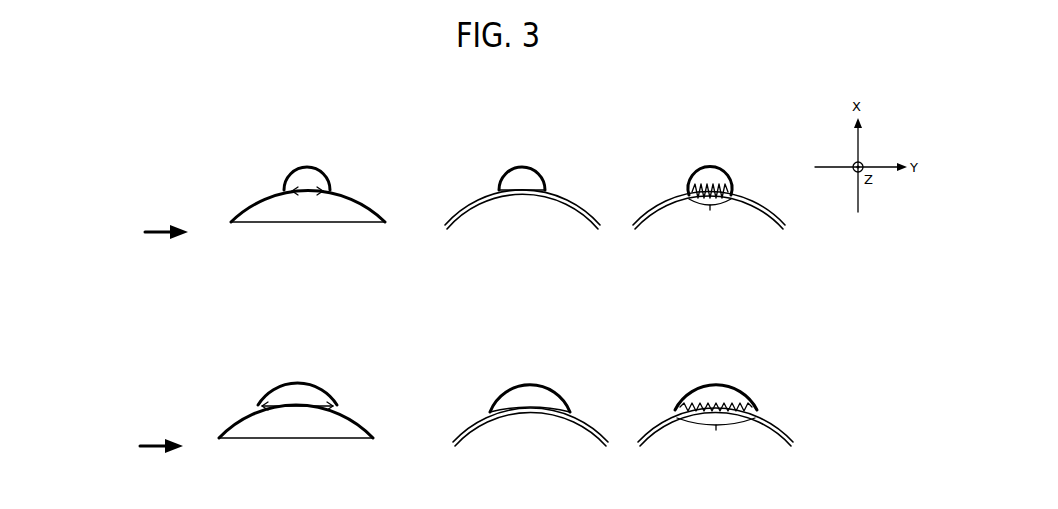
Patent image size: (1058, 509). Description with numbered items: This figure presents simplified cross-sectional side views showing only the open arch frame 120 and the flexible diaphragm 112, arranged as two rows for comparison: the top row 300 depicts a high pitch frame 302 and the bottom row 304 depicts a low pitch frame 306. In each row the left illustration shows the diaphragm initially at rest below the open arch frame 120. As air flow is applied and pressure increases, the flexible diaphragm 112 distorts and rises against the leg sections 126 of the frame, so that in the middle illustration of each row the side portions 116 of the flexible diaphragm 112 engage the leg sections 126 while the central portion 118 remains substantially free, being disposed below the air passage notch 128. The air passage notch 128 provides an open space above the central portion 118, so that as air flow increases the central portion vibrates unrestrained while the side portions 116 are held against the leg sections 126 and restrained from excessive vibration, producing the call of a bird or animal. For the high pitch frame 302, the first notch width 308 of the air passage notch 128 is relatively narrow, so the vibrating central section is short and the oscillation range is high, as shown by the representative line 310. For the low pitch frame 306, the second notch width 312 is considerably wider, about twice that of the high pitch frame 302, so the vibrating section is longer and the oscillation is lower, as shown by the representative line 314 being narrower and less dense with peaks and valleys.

The flexible diaphragm 112 is at (260, 229).
The side portions 116 is at (466, 218).
The central portion 118 is at (513, 193).
The open arch frame 120 is at (252, 284).
The leg sections 126 is at (360, 196).
The air passage notch 128 is at (305, 167).
The top row 300 is at (141, 220).
The high pitch frame 302 is at (242, 181).
The bottom row 304 is at (126, 433).
The low pitch frame 306 is at (202, 411).
The width W1 308 is at (318, 206).
The representative line 310 is at (710, 210).
The width W2 312 is at (305, 416).
The representative line 314 is at (716, 427).